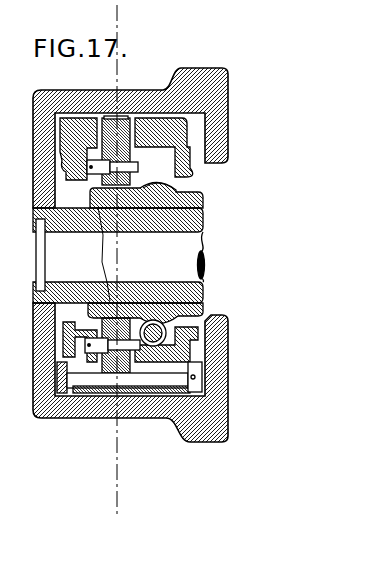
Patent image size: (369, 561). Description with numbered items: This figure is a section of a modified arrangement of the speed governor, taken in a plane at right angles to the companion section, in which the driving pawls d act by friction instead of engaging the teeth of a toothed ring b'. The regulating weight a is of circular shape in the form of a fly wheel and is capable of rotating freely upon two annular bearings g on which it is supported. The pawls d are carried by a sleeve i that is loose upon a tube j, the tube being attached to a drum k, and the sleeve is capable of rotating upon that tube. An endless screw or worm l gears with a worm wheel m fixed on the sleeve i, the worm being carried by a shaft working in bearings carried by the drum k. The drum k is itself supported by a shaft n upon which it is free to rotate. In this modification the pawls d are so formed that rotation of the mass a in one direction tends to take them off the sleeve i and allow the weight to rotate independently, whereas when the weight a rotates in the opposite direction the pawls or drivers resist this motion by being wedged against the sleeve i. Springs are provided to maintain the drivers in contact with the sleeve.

The drum k is at (34, 128).
The annular bearings g is at (203, 199).
The tube j is at (204, 215).
The shaft n is at (83, 255).
The sleeve i is at (102, 254).
The toothed ring b' is at (113, 258).
The regulating weight a is at (68, 192).
The driving pawls d is at (139, 165).
The worm wheel m is at (161, 322).
The endless screw l is at (155, 340).